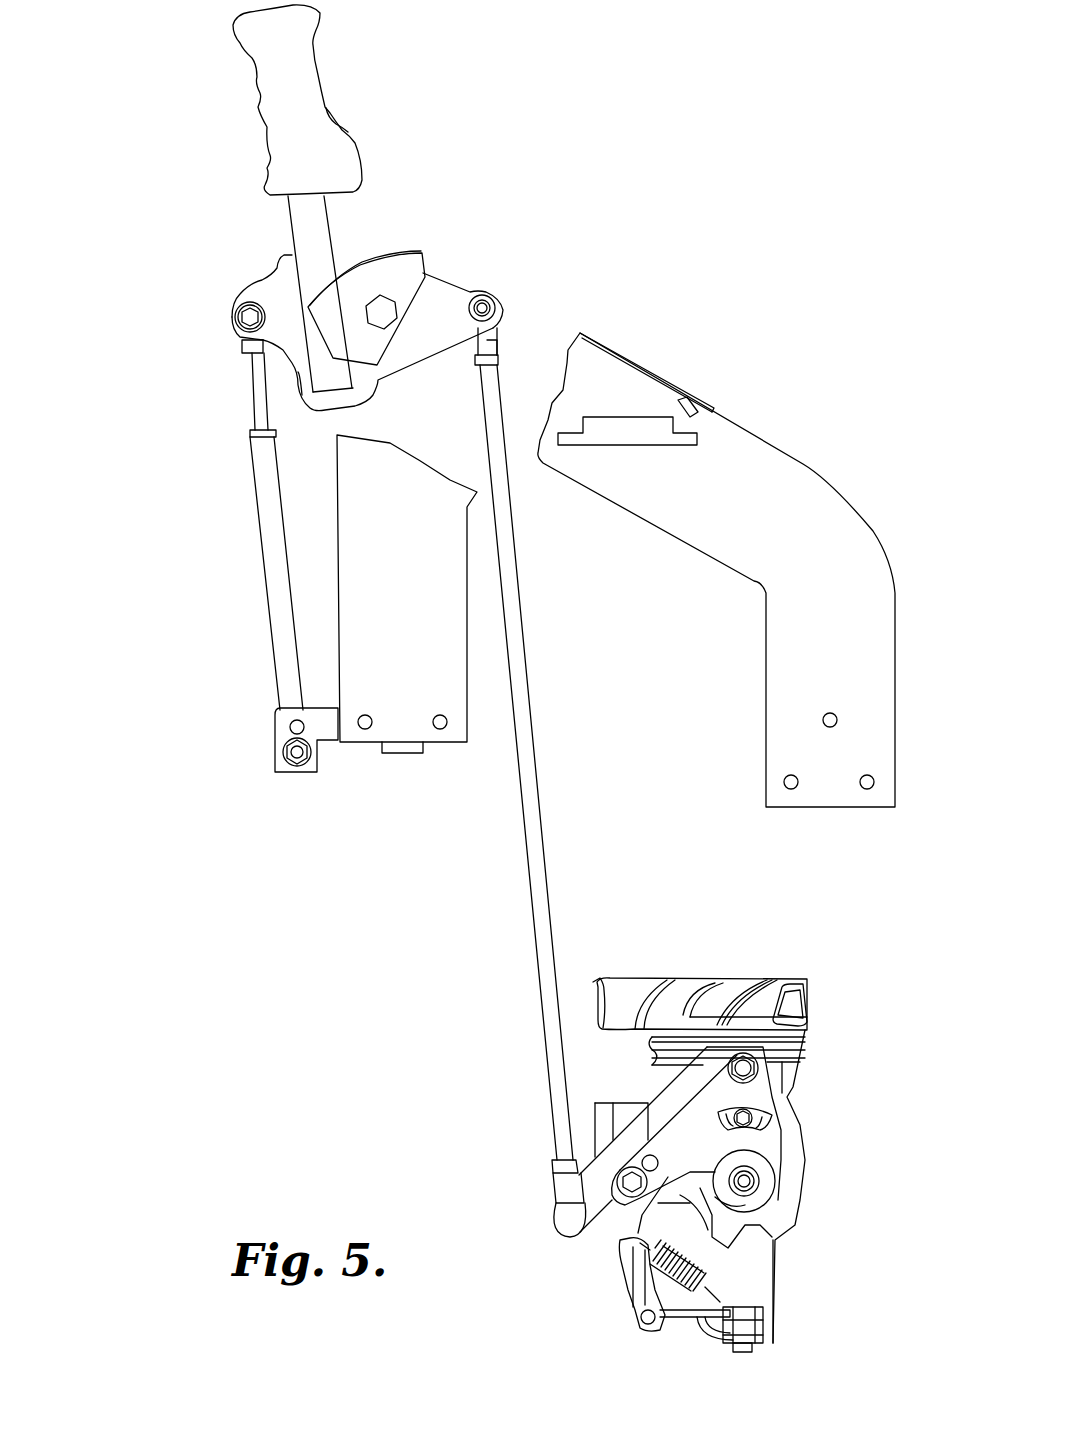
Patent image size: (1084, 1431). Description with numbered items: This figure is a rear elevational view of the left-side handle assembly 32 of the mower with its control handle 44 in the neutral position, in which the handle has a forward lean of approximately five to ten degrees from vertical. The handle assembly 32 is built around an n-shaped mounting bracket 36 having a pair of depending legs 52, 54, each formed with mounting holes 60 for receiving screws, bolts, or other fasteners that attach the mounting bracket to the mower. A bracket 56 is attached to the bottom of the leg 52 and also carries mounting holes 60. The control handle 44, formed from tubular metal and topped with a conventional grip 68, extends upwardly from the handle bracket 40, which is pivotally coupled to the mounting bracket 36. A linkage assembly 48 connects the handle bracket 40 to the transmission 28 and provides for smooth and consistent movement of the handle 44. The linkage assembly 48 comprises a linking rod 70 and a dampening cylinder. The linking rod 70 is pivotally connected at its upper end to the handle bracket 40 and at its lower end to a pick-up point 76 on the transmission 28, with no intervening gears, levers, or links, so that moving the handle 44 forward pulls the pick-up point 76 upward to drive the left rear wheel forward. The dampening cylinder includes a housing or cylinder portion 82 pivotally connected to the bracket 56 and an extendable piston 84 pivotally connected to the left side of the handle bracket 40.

The transmission 28 is at (775, 958).
The handle assembly 32 is at (663, 288).
The mounting bracket 36 is at (764, 449).
The handle bracket 40 is at (463, 290).
The control handle 44 is at (318, 223).
The linkage assembly 48 is at (213, 512).
The leg 52 is at (457, 737).
The leg 54 is at (785, 663).
The bracket 56 is at (330, 735).
The mounting holes 60 is at (440, 715).
The grip 68 is at (305, 88).
The linking rod 70 is at (535, 860).
The pick-up point 76 is at (553, 1212).
The housing or cylinder portion 82 is at (282, 583).
The extendable piston 84 is at (257, 385).